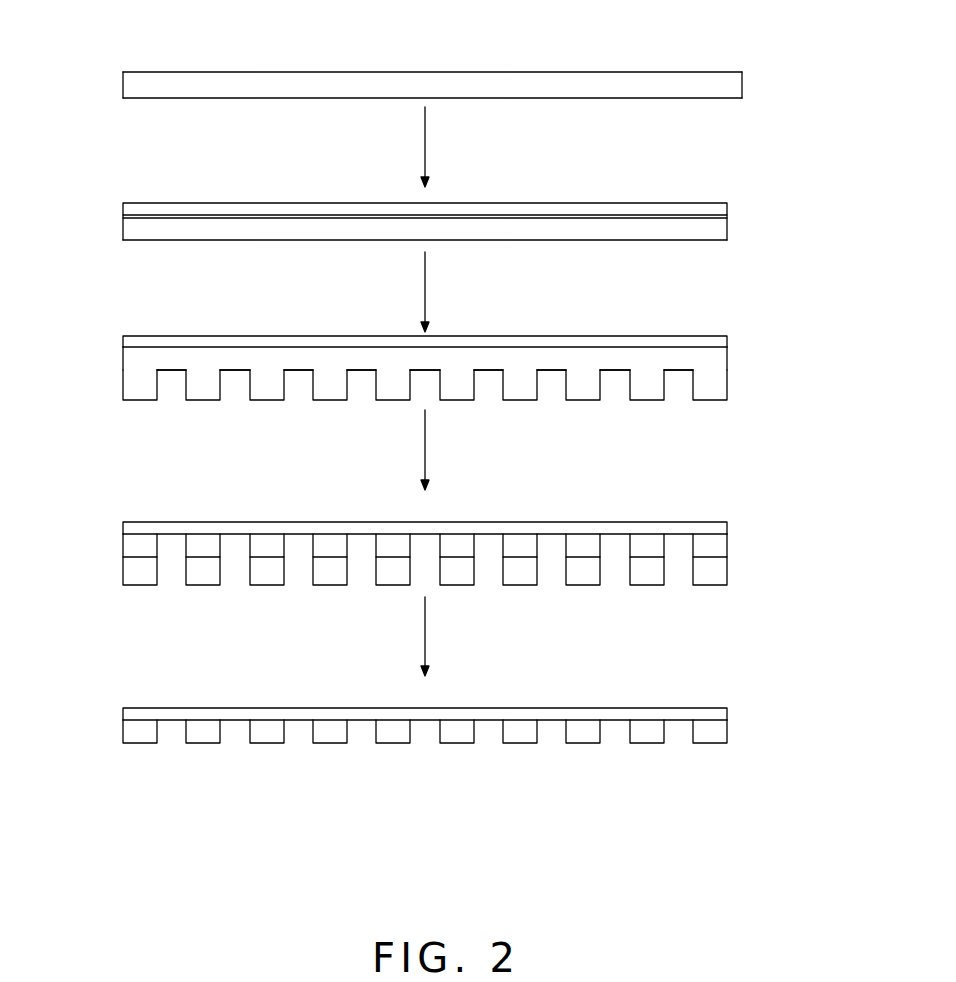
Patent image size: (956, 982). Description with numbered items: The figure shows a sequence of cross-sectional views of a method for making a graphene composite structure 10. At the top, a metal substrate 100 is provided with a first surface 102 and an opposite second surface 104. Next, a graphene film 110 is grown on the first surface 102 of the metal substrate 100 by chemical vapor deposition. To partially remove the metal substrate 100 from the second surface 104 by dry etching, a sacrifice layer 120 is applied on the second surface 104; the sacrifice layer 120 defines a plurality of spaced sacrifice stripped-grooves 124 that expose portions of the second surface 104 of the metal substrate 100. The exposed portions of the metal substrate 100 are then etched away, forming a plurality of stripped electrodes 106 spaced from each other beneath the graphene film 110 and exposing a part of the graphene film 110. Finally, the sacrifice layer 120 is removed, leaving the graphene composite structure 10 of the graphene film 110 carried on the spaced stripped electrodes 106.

The graphene composite structure 10 is at (702, 693).
The metal substrate 100 is at (700, 58).
The first surface 102 is at (163, 72).
The second surface 104 is at (168, 98).
The stripped electrodes 106 is at (717, 547).
The graphene film 110 is at (712, 210).
The sacrifice layer 120 is at (713, 390).
The sacrifice stripped-grooves 124 is at (677, 393).